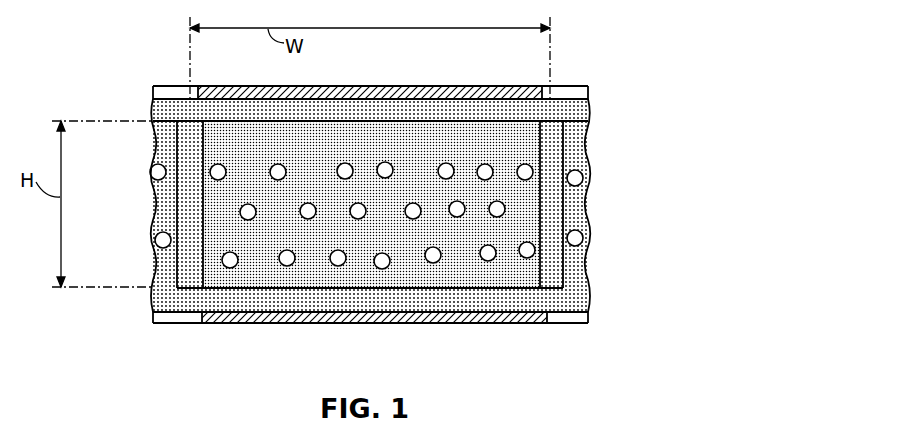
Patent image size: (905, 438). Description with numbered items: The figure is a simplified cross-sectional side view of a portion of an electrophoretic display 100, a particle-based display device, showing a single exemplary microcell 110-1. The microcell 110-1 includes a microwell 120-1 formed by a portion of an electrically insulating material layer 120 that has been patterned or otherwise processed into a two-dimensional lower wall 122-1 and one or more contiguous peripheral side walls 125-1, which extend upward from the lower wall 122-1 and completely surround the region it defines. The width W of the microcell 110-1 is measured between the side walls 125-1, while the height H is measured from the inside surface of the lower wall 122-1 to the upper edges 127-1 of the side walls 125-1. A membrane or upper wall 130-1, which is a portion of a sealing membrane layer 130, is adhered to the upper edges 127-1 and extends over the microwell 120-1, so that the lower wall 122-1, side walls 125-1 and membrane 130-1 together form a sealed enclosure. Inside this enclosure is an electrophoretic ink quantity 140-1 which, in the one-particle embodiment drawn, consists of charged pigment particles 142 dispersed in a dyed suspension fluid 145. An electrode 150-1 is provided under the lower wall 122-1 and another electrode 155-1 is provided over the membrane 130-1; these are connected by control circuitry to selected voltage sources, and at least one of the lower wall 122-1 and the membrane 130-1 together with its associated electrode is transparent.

The electrophoretic display 100 is at (427, 215).
The microcell 110-1 is at (427, 234).
The electrically insulating material layer 120 is at (157, 297).
The microwell 120-1 is at (388, 338).
The lower wall 122-1 is at (483, 320).
The peripheral side walls 125-1 is at (547, 265).
The upper edges of side walls 127-1 is at (188, 125).
The sealing membrane layer 130 is at (155, 105).
The membrane (upper wall) 130-1 is at (587, 258).
The electrophoretic ink quantity 140-1 is at (459, 200).
The charged pigment particles 142 is at (457, 113).
The dyed suspension fluid 145 is at (489, 177).
The electrode 150-1 is at (245, 320).
The electrode 155-1 is at (415, 87).